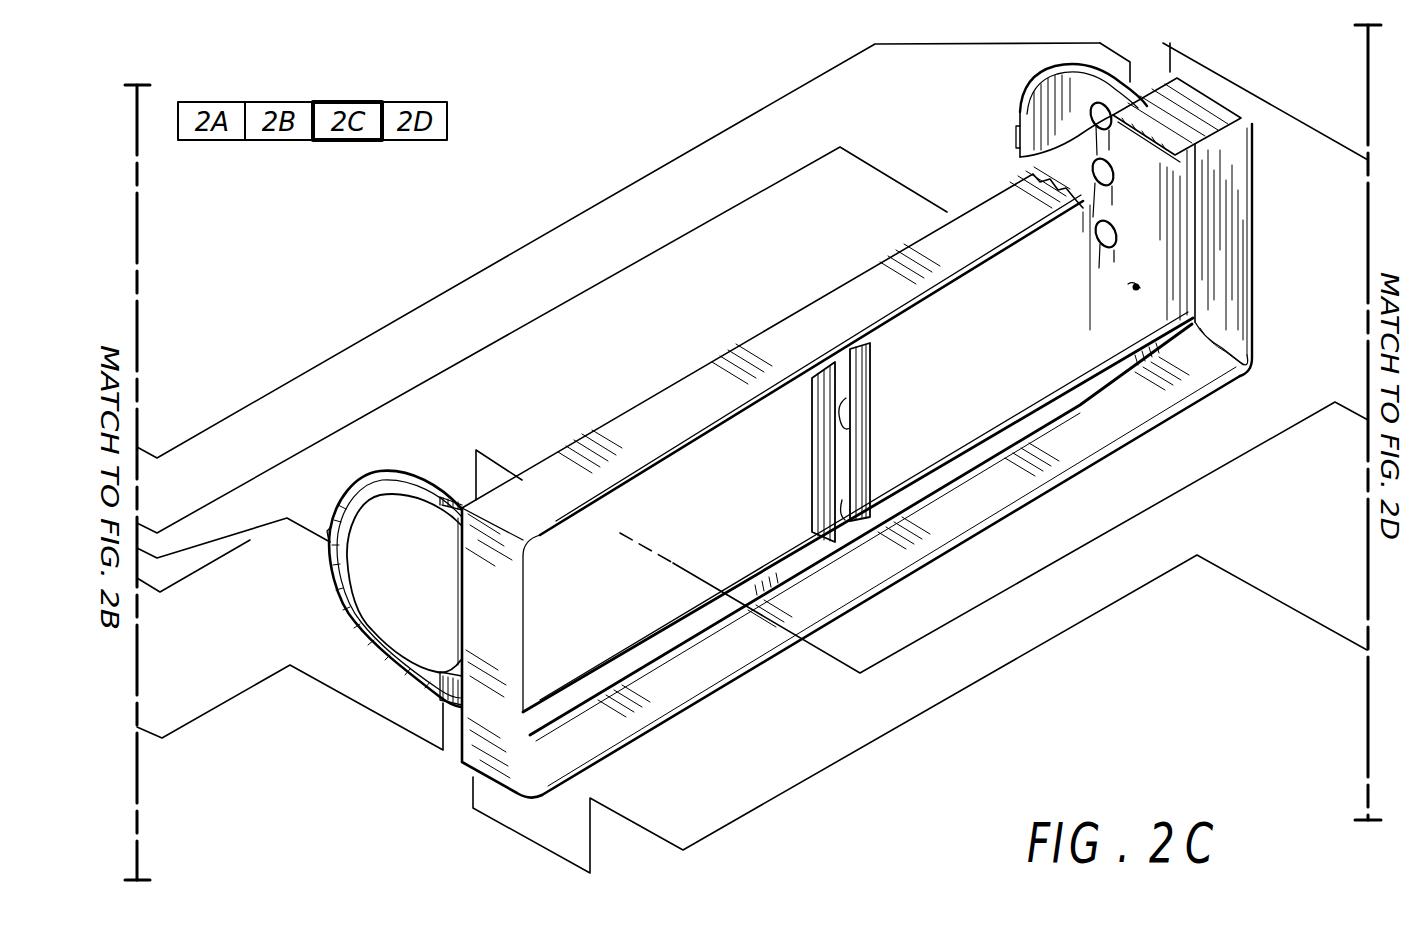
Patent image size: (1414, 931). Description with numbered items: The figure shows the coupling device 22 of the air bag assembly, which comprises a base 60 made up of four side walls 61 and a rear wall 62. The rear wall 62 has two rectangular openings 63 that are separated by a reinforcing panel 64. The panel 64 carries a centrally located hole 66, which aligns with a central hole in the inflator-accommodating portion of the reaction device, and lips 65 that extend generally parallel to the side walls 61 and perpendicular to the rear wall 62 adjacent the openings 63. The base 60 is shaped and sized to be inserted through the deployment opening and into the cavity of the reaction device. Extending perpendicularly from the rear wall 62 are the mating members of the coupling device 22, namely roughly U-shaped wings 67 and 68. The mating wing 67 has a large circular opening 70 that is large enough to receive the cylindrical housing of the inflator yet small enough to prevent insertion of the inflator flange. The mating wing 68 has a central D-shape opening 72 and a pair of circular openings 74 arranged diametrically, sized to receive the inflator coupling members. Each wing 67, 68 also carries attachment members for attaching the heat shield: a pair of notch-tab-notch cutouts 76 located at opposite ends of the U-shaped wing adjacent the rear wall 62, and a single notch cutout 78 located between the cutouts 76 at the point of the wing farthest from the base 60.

The coupling device 22 is at (1113, 66).
The base 60 is at (1252, 224).
The side walls 61 is at (1205, 108).
The rear wall 62 is at (950, 467).
The rectangular openings 63 is at (976, 358).
The reinforcing panel 64 is at (885, 535).
The lips 65 is at (870, 460).
The centrally located hole 66 is at (848, 408).
The mating wing 67 is at (338, 505).
The mating wing 68 is at (1077, 100).
The large circular opening 70 is at (430, 600).
The central D-shape opening 72 is at (1100, 205).
The circular openings 74 is at (1020, 156).
The notch-tab-notch cutouts 76 is at (1147, 100).
The single notch cutout 78 is at (325, 532).